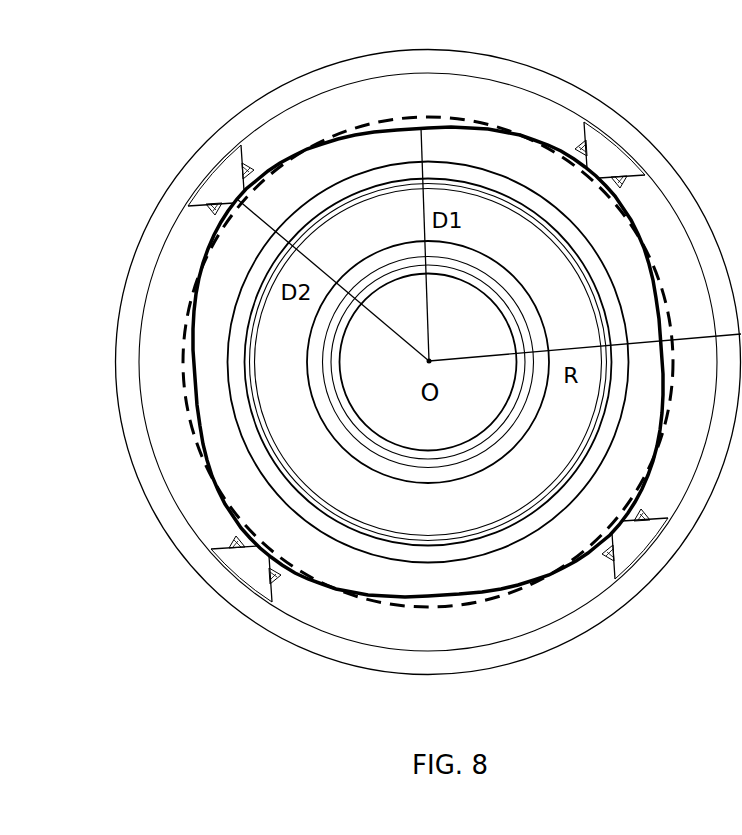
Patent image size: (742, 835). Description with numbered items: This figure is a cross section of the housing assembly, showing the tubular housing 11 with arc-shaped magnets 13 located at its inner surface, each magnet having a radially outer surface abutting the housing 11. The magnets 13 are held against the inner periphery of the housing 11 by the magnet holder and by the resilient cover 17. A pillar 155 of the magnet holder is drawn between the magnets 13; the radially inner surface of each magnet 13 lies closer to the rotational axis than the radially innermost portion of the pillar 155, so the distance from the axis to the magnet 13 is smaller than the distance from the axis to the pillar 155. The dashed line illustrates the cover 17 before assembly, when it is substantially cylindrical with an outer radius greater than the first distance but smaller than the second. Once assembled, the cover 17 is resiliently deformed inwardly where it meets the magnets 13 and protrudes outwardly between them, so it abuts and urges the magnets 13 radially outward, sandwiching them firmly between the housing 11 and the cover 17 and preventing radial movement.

The housing 11 is at (135, 272).
The magnets 13 is at (338, 108).
The resilient cover 17 is at (218, 198).
The pillar 155 is at (228, 168).